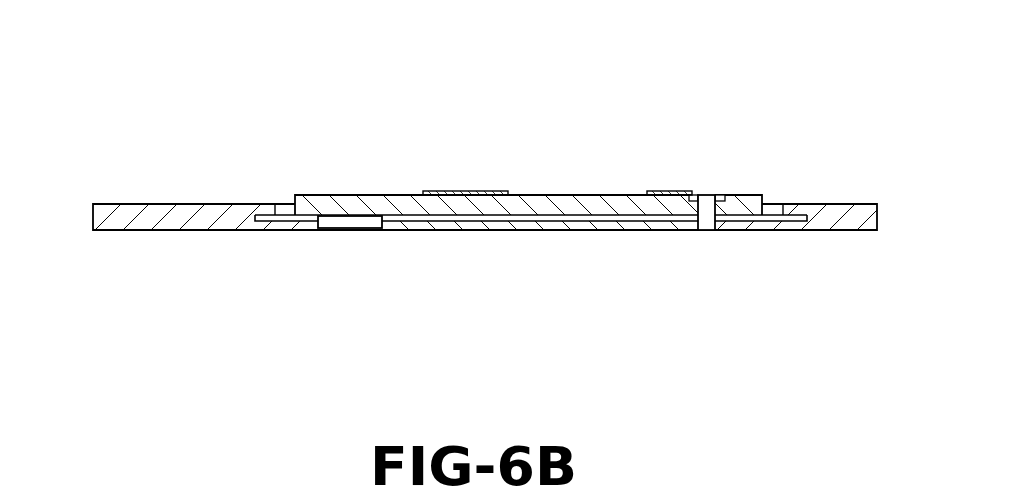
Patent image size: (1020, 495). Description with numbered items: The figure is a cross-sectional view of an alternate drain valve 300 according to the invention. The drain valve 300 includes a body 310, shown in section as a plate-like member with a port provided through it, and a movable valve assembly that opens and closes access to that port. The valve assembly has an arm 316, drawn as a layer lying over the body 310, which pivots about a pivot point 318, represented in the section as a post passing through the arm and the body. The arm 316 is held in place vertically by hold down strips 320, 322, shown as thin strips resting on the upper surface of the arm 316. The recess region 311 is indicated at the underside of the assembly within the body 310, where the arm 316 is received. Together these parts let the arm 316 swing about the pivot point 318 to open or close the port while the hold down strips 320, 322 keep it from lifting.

The drain valve 300 is at (792, 126).
The body 310 is at (165, 227).
The recess in circuit board 311 is at (765, 223).
The arm 316 is at (297, 197).
The pivot point 318 is at (712, 198).
The hold down strip 320 is at (667, 191).
The hold down strip 322 is at (452, 191).